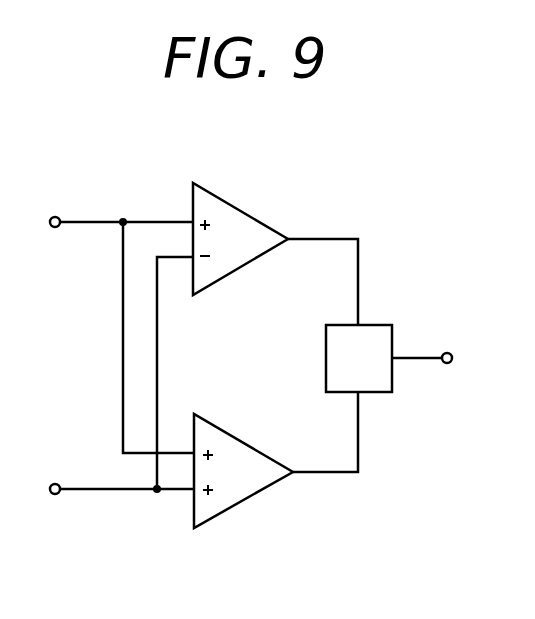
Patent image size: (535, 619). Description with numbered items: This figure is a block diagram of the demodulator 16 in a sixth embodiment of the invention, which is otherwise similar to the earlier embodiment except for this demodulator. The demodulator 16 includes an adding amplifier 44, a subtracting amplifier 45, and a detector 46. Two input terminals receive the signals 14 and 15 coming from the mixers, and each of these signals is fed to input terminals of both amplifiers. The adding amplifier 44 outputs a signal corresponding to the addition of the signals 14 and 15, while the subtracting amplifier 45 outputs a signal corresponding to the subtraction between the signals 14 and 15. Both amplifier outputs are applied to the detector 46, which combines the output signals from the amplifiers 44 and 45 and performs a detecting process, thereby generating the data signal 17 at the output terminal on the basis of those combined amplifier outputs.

The signal 14 is at (87, 487).
The signal 15 is at (78, 228).
The demodulator 16 is at (370, 213).
The data signal 17 is at (424, 346).
The adding amplifier 44 is at (263, 493).
The subtracting amplifier 45 is at (243, 210).
The detector 46 is at (383, 392).